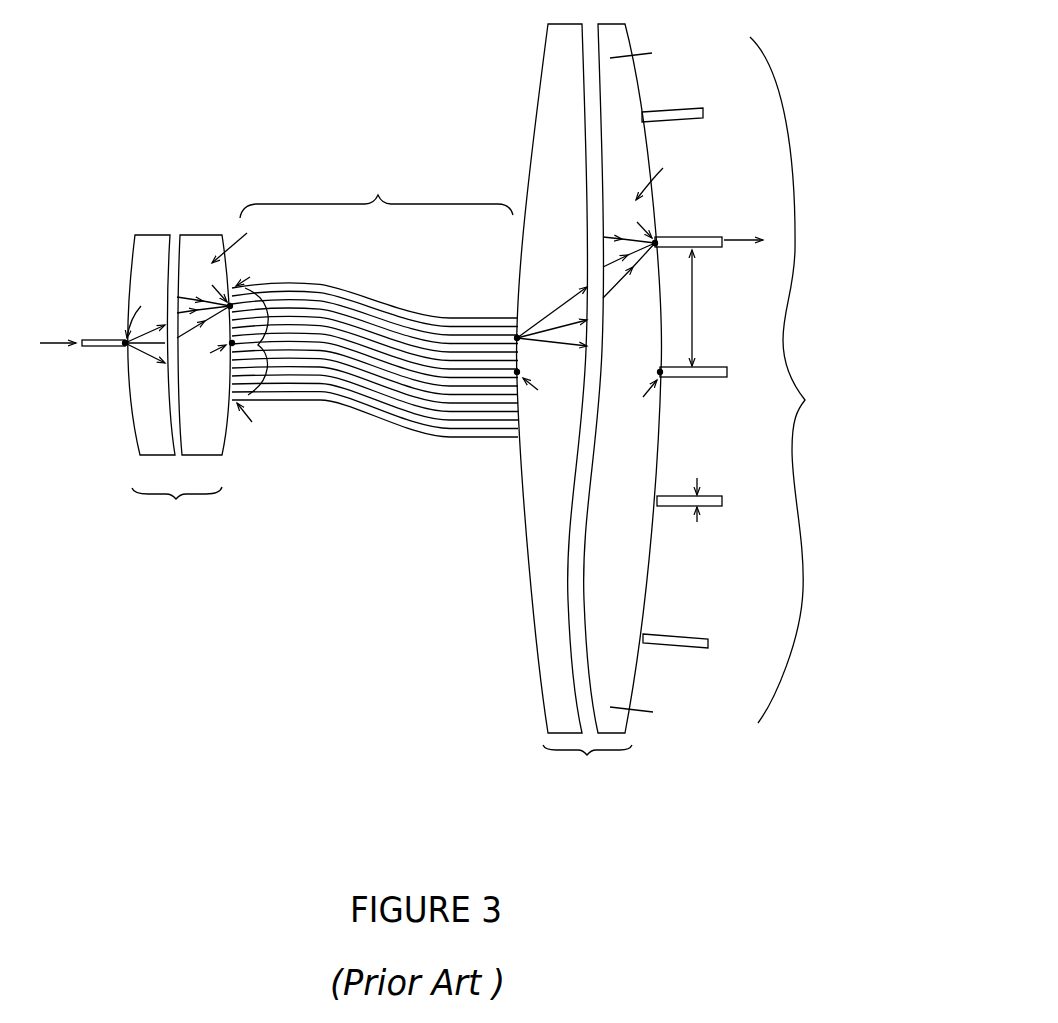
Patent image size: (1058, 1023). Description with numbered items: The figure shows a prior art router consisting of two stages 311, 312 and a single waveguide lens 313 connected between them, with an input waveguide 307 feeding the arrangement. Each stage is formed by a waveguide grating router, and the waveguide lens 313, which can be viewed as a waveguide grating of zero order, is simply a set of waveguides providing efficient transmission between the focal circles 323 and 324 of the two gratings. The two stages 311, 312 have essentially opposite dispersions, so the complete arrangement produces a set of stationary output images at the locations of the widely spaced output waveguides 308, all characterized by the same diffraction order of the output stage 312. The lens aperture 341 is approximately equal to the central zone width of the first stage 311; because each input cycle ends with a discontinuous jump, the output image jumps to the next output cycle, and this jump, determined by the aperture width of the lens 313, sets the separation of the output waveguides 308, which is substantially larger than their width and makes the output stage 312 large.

The input waveguide 307 is at (105, 332).
The output waveguides 308 is at (699, 228).
The first stage 311 is at (199, 394).
The second stage 312 is at (617, 424).
The waveguide lens 313 is at (375, 286).
The focal circle 323 is at (227, 443).
The focal circle 324 is at (532, 638).
The lens aperture 341 is at (273, 343).